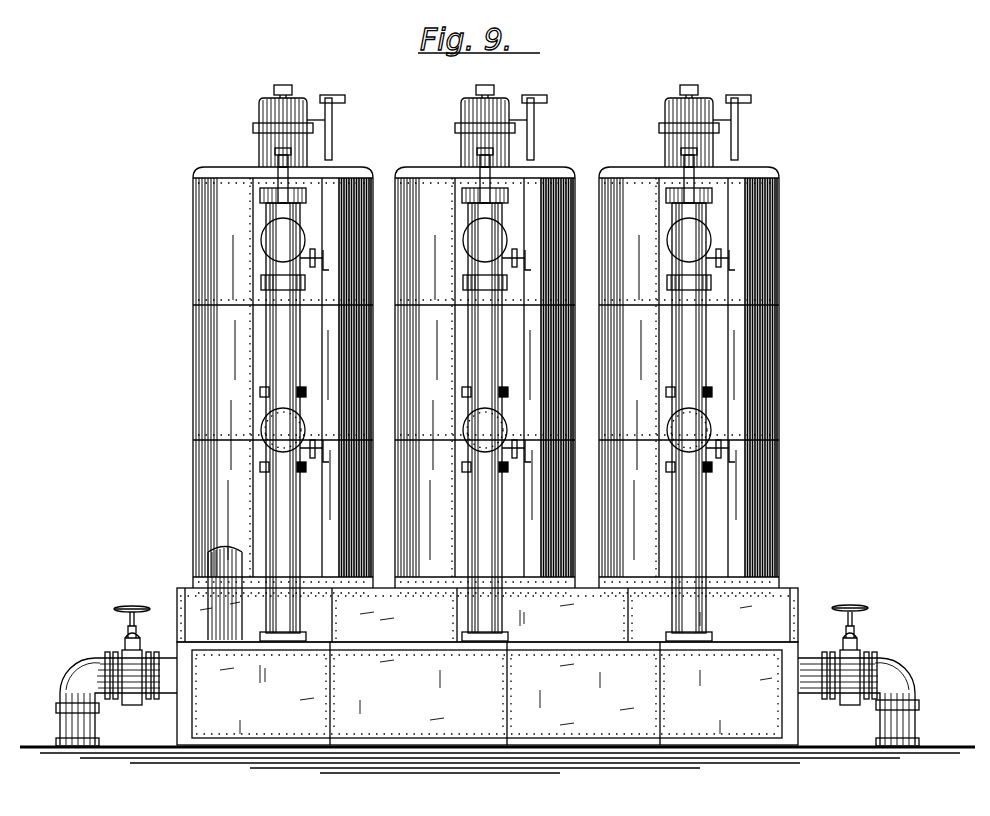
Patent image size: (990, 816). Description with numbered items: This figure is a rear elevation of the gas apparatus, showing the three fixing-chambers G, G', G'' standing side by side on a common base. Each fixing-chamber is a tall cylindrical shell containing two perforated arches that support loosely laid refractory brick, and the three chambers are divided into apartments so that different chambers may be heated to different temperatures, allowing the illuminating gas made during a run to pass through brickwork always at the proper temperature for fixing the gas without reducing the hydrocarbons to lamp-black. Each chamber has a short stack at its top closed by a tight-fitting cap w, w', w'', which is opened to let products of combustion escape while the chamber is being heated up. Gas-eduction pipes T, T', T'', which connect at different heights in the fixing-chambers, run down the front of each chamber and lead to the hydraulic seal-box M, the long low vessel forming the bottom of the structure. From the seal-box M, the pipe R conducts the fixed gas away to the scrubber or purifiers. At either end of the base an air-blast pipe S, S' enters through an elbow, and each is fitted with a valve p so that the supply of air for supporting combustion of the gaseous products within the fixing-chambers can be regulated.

The fixing-chamber G is at (698, 404).
The fixing-chamber G' is at (485, 404).
The fixing-chamber G'' is at (270, 404).
The gas-eduction pipe T is at (690, 429).
The gas-eduction pipe T' is at (488, 429).
The gas-eduction pipe T'' is at (287, 429).
The tight-fitting cap w is at (695, 126).
The tight-fitting cap w' is at (491, 126).
The tight-fitting cap w'' is at (289, 126).
The pipe R is at (202, 594).
The valve p is at (490, 655).
The air-blast pipe S is at (866, 702).
The air-blast pipe S' is at (110, 702).
The hydraulic seal-box M is at (487, 693).